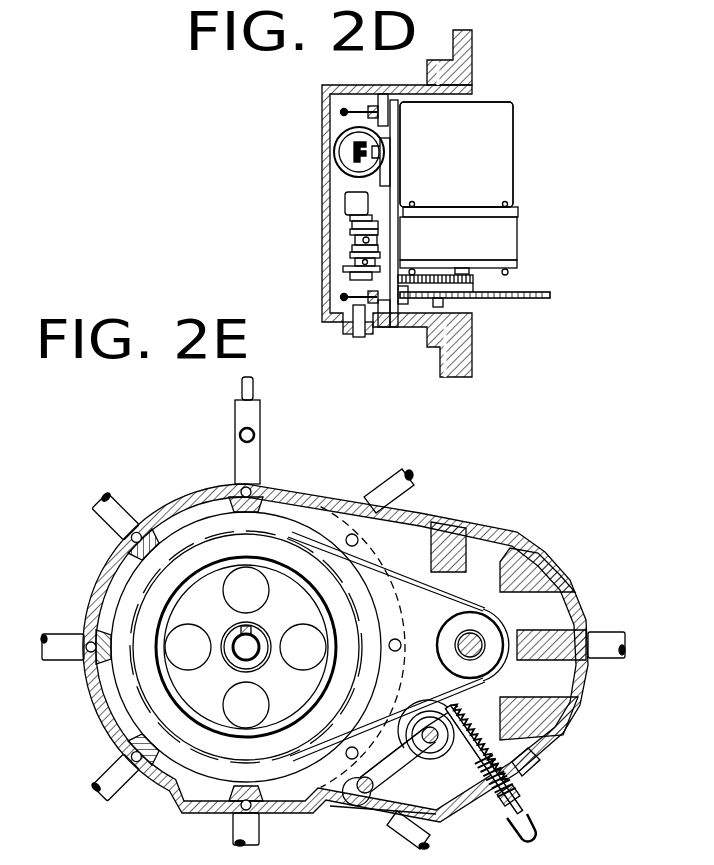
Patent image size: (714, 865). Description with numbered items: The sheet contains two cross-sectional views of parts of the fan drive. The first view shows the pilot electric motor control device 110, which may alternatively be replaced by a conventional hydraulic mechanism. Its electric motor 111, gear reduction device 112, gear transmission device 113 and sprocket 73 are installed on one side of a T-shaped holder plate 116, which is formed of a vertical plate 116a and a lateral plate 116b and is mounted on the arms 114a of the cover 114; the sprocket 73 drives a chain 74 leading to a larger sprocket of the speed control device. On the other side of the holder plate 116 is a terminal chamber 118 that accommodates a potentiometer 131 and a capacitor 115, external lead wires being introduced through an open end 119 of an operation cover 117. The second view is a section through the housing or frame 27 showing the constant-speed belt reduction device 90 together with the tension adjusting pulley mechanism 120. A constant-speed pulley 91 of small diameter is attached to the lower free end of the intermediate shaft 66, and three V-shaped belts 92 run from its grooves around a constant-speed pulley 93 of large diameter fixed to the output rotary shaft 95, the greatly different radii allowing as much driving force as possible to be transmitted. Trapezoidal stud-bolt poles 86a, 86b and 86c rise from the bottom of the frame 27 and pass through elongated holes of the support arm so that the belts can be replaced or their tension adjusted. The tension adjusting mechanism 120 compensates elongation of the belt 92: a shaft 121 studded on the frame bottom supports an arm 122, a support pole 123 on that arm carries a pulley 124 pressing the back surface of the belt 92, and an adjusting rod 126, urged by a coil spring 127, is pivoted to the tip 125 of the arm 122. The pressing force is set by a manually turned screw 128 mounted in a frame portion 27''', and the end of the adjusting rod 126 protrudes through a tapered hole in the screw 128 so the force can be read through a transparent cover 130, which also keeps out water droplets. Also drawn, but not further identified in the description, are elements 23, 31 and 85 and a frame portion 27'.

In FIG. 2D, the pilot electric motor control device 110 is at (548, 84).
In FIG. 2D, the electric motor 111 is at (500, 180).
In FIG. 2D, the gear reduction device 112 is at (505, 238).
In FIG. 2D, the gear transmission device 113 is at (460, 272).
In FIG. 2D, the cover 114 is at (352, 86).
In FIG. 2D, the arms of the cover 114a is at (382, 96).
In FIG. 2D, the capacitor 115 is at (336, 160).
In FIG. 2D, the T-shaped holder plate 116 is at (394, 268).
In FIG. 2D, the vertical plate 116a is at (392, 183).
In FIG. 2D, the lateral plate 116b is at (450, 274).
In FIG. 2D, the operation cover 117 is at (322, 140).
In FIG. 2D, the terminal chamber 118 is at (330, 262).
In FIG. 2D, the open end 119 is at (356, 338).
In FIG. 2D, the potentiometer 131 is at (345, 200).
In FIG. 2D, the sprocket 73 is at (478, 300).
In FIG. 2D, the chain 74 is at (527, 302).
In FIG. 2E, the connecting tubes 23 is at (250, 463).
In FIG. 2E, the housing or frame 27 is at (336, 643).
In FIG. 2E, the housing bottom wall 27' is at (403, 829).
In FIG. 2E, the frame 27''' is at (536, 763).
In FIG. 2E, the tube bracket 31 is at (235, 425).
In FIG. 2E, the intermediate shaft 66 is at (457, 644).
In FIG. 2E, the housing rib 85 is at (545, 630).
In FIG. 2E, the stud bolt pole 86a is at (440, 548).
In FIG. 2E, the stud bolt pole 86b is at (500, 563).
In FIG. 2E, the stud bolt pole 86c is at (525, 696).
In FIG. 2E, the constant-speed belt reduction device 90 is at (412, 578).
In FIG. 2E, the constant-speed pulley 91 is at (490, 608).
In FIG. 2E, the V-shaped belt 92 is at (452, 590).
In FIG. 2E, the constant-speed pulley 93 is at (205, 556).
In FIG. 2E, the output rotary shaft 95 is at (253, 662).
In FIG. 2E, the tension adjusting pulley mechanism 120 is at (468, 811).
In FIG. 2E, the shaft 121 is at (355, 783).
In FIG. 2E, the arm 122 is at (380, 790).
In FIG. 2E, the support pole 123 is at (440, 748).
In FIG. 2E, the pulley 124 is at (443, 792).
In FIG. 2E, the tip of the arm 125 is at (452, 706).
In FIG. 2E, the adjusting rod 126 is at (484, 746).
In FIG. 2E, the coil spring 127 is at (496, 768).
In FIG. 2E, the screw 128 is at (530, 795).
In FIG. 2E, the transparent cover 130 is at (540, 825).